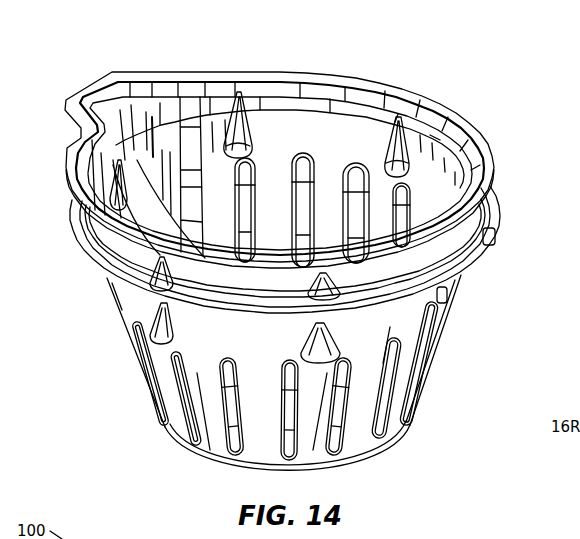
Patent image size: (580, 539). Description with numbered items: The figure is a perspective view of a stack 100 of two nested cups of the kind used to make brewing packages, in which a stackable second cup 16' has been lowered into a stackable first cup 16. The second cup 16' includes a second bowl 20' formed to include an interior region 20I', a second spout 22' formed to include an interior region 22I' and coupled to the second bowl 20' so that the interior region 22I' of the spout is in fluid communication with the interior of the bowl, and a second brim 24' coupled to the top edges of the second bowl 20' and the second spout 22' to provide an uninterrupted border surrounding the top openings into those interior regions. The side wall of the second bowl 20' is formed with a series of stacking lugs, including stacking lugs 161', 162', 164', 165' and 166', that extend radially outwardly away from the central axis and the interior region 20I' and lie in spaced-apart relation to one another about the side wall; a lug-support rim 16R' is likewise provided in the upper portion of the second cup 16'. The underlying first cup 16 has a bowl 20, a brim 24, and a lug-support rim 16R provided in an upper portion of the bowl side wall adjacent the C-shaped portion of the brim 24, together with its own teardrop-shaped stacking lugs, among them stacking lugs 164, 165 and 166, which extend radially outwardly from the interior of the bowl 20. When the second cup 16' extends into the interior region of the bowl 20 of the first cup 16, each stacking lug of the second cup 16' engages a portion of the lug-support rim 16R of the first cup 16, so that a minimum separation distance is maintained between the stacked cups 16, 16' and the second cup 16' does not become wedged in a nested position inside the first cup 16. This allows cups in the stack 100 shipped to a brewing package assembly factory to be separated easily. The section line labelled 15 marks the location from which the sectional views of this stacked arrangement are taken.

The section line 15 is at (67, 78).
The cup 16 is at (284, 349).
The second cup 16' is at (280, 140).
The lug-support rim 16R is at (275, 343).
The lug-support rim of second cup 16R' is at (317, 116).
The bowl 20 is at (391, 380).
The second bowl 20' is at (169, 370).
The interior region of second bowl 20I' is at (322, 159).
The second spout 22' is at (148, 148).
The interior region of second spout 22I' is at (163, 136).
The brim 24 is at (300, 244).
The second brim 24' is at (255, 170).
The stack 100 is at (498, 66).
The stacking lug 161' is at (341, 125).
The stacking lug 162' is at (222, 126).
The stacking lug 164 is at (126, 349).
The stacking lug 164' is at (111, 289).
The stacking lug 165 is at (235, 426).
The stacking lug 165' is at (283, 311).
The stacking lug 166 is at (474, 312).
The stacking lug 166' is at (494, 235).